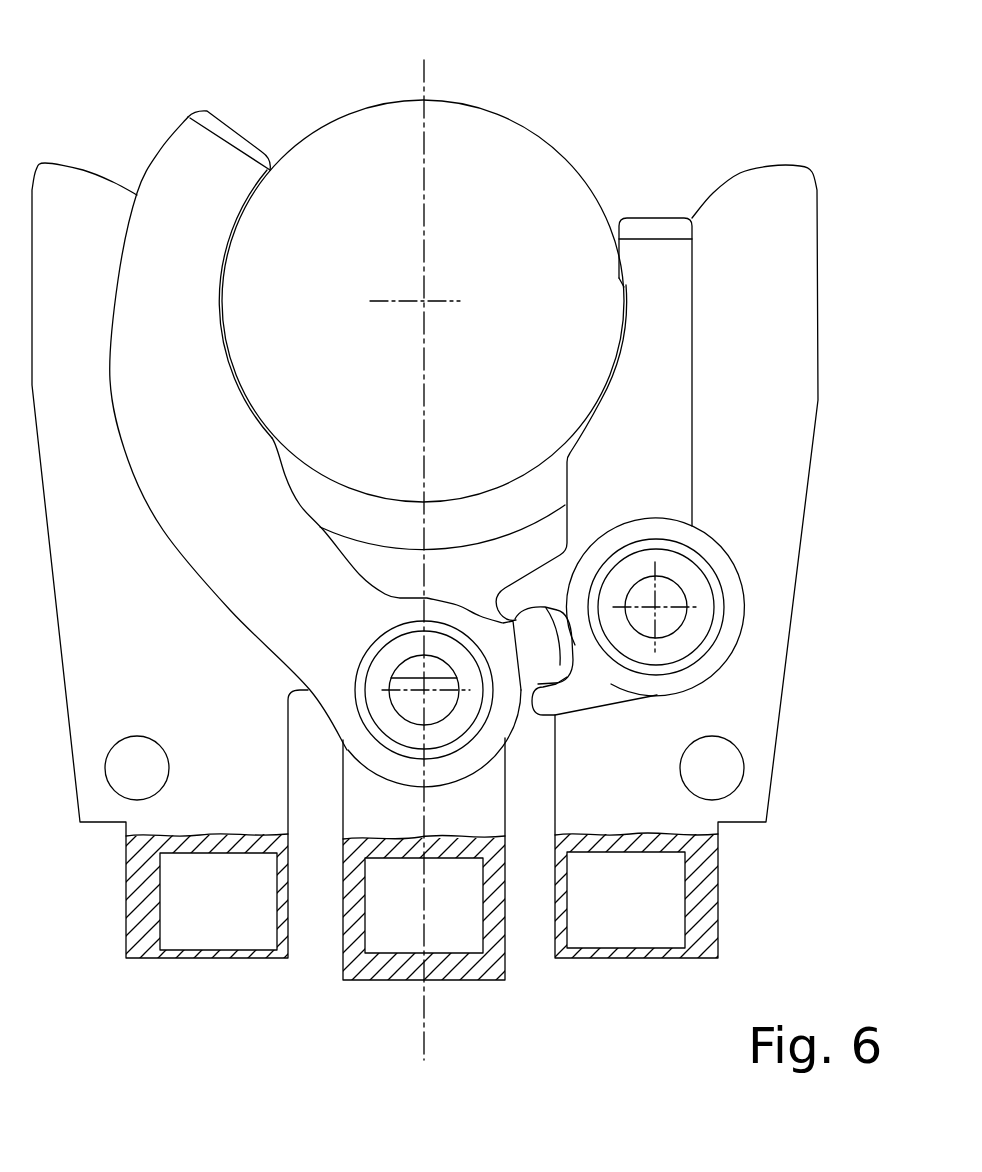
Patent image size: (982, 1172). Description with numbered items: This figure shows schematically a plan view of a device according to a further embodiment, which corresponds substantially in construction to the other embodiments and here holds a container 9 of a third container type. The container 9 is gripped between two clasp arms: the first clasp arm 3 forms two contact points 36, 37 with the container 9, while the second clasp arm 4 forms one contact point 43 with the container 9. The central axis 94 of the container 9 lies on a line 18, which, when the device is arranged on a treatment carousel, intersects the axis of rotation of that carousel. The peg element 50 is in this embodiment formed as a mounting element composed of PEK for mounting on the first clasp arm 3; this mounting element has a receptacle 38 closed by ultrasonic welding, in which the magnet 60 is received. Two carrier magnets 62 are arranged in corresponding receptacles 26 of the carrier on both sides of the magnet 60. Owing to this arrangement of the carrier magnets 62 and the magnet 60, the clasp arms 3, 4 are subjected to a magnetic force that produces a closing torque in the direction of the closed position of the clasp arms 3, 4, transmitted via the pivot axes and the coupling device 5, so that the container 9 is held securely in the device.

The first clasp arm 3 is at (192, 140).
The contact point 36 is at (253, 190).
The container 9 is at (545, 137).
The second clasp arm 4 is at (665, 255).
The central axis 94 is at (423, 301).
The contact point 43 is at (625, 285).
The contact point 37 is at (253, 417).
The coupling device 5 is at (499, 571).
The peg element 50 is at (547, 647).
The receptacles 26 is at (163, 893).
The carrier magnets 62 is at (206, 930).
The magnet 60 is at (392, 940).
The receptacle 38 is at (490, 912).
The line 18 is at (427, 1027).